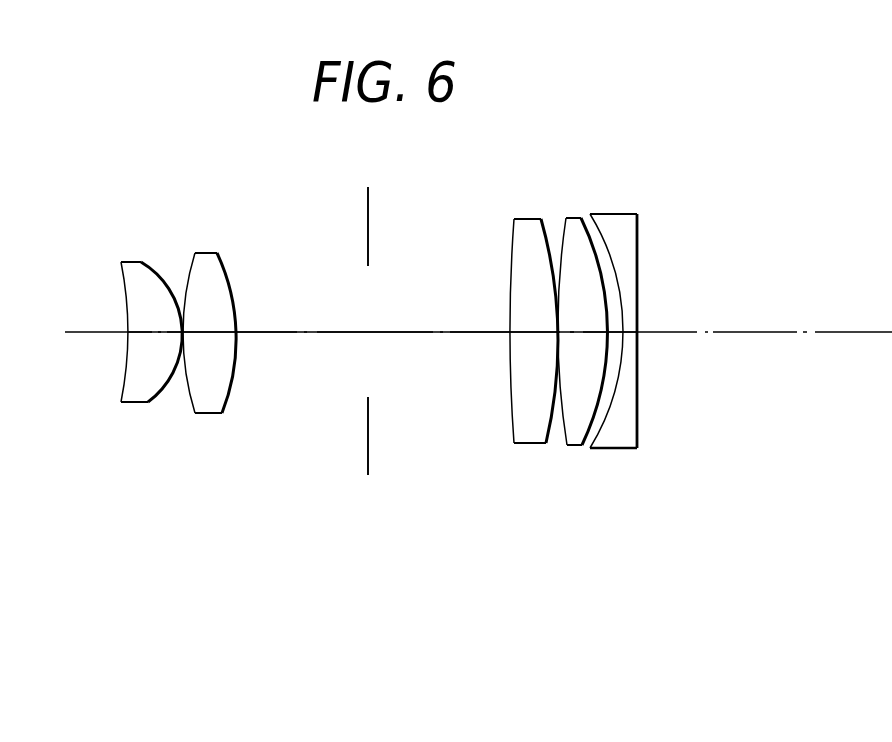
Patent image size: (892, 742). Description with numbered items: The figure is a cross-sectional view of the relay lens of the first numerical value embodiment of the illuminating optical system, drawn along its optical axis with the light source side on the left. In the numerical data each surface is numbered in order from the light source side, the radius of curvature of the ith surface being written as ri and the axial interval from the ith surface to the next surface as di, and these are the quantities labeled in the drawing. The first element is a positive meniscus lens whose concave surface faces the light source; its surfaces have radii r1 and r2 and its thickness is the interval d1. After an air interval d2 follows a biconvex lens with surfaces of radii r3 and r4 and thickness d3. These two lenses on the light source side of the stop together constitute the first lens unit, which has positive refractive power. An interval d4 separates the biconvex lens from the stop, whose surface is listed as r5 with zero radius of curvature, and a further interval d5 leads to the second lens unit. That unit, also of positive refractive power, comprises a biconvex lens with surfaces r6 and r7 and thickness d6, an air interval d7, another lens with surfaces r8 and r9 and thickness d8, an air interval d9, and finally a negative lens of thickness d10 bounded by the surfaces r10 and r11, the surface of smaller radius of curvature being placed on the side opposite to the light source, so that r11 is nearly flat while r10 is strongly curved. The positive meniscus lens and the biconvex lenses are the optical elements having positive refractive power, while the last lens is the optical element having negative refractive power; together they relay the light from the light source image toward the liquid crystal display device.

The radius of curvature of the first surface r1 is at (122, 375).
The radius of curvature of the second surface r2 is at (156, 395).
The radius of curvature of the third surface r3 is at (190, 405).
The radius of curvature of the fourth surface r4 is at (225, 398).
The radius of curvature of the fifth surface r5 is at (368, 443).
The radius of curvature of the sixth surface r6 is at (512, 415).
The radius of curvature of the seventh surface r7 is at (547, 437).
The radius of curvature of the eighth surface r8 is at (563, 438).
The radius of curvature of the ninth surface r9 is at (590, 425).
The radius of curvature of the tenth surface r10 is at (604, 425).
The radius of curvature of the eleventh surface r11 is at (638, 430).
The interval from the first surface to the second surface d1 is at (145, 332).
The interval from the second surface to the third surface d2 is at (182, 332).
The interval from the third surface to the fourth surface d3 is at (210, 332).
The interval from the fourth surface to the fifth surface d4 is at (277, 332).
The interval from the fifth surface to the sixth surface d5 is at (460, 332).
The interval from the sixth surface to the seventh surface d6 is at (533, 332).
The interval from the seventh surface to the eighth surface d7 is at (558, 332).
The interval from the eighth surface to the ninth surface d8 is at (583, 332).
The interval from the ninth surface to the tenth surface d9 is at (613, 332).
The interval from the tenth surface to the eleventh surface d10 is at (630, 332).